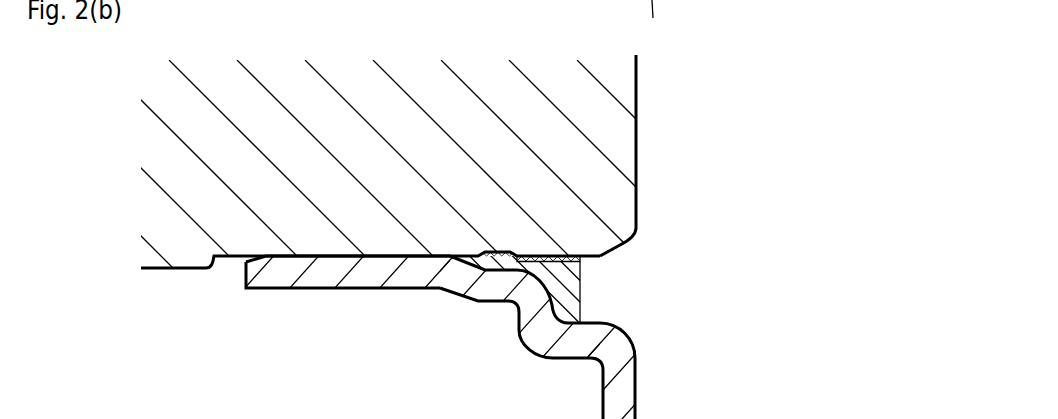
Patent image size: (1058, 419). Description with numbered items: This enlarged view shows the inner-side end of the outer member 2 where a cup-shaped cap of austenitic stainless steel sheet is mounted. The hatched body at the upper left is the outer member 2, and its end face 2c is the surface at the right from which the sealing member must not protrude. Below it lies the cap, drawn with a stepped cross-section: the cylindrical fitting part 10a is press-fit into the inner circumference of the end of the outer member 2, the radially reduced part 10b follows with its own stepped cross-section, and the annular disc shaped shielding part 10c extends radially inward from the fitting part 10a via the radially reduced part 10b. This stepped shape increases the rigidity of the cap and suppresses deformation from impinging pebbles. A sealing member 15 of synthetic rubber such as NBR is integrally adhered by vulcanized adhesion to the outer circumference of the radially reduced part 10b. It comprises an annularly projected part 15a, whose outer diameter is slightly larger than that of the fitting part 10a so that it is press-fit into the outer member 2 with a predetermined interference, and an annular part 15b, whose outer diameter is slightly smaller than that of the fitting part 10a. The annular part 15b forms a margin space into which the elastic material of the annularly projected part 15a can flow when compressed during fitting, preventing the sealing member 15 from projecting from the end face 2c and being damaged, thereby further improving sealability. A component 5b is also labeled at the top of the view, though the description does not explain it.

The outer member 2 is at (263, 105).
The end face of the outer member 2c is at (636, 105).
The component above case 5b is at (656, 26).
The cylindrical fitting part 10a is at (322, 275).
The radially reduced part 10b is at (533, 313).
The annular disc shaped shielding part 10c is at (620, 393).
The sealing member 15 is at (650, 210).
The annularly projected part 15a is at (507, 250).
The annular part 15b is at (565, 250).